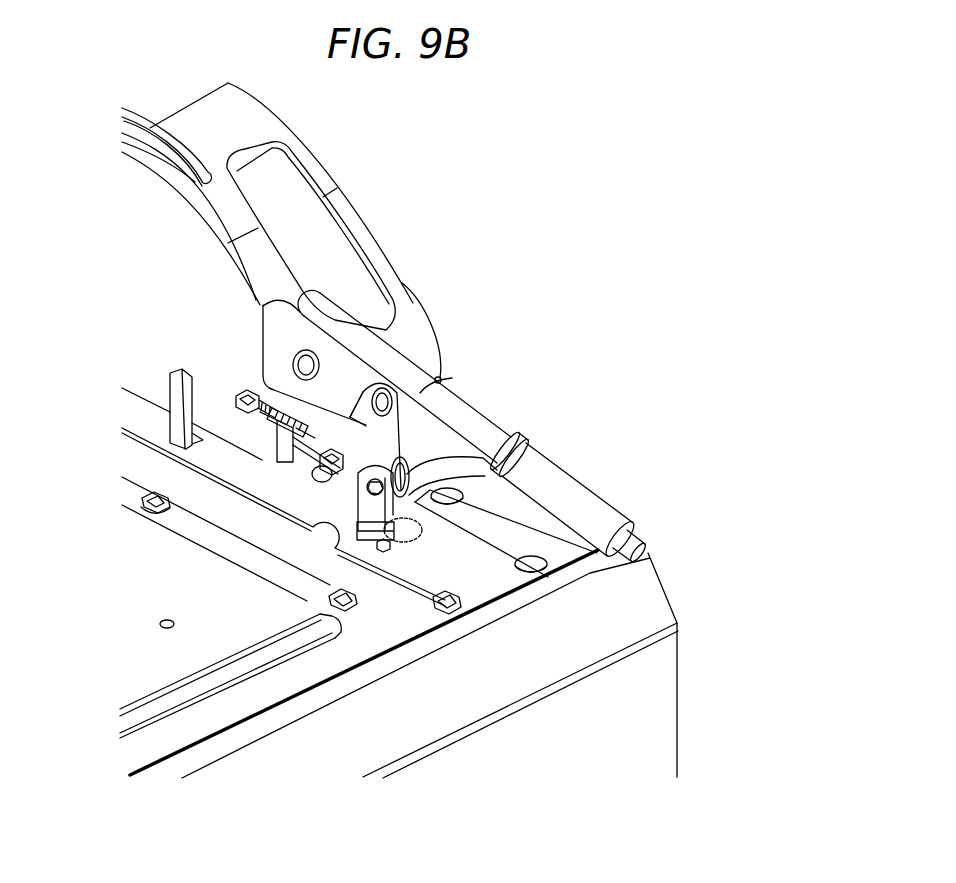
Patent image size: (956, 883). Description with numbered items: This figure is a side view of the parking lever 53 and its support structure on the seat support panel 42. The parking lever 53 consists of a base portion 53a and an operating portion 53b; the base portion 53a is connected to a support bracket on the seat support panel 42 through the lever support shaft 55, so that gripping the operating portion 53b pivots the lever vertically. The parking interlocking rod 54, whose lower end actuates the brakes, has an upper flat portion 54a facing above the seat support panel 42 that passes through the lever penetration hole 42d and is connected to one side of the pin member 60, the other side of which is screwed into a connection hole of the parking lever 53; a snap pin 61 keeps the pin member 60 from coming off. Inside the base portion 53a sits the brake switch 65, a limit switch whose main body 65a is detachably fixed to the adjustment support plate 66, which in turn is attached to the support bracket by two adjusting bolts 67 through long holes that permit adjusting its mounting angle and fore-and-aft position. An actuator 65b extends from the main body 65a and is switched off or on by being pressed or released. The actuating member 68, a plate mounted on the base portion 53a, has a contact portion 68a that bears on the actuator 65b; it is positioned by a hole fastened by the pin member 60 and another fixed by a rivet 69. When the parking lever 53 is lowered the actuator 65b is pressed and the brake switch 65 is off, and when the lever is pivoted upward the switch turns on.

The seat support panel 42 is at (491, 588).
The lever penetration hole 42d is at (416, 533).
The parking lever 53 is at (511, 429).
The base portion 53a is at (362, 391).
The operating portion 53b is at (578, 481).
The parking interlocking rod 54 is at (383, 552).
The upper flat portion 54a is at (358, 534).
The lever support shaft 55 is at (291, 362).
The pin member 60 is at (368, 515).
The snap pin 61 is at (405, 477).
The brake switch 65 is at (263, 526).
The main body 65a is at (285, 420).
The actuator 65b is at (305, 435).
The adjustment support plate 66 is at (310, 455).
The adjusting bolt 67 is at (243, 402).
The actuating member 68 is at (397, 438).
The contact portion 68a is at (351, 416).
The rivet 69 is at (441, 381).